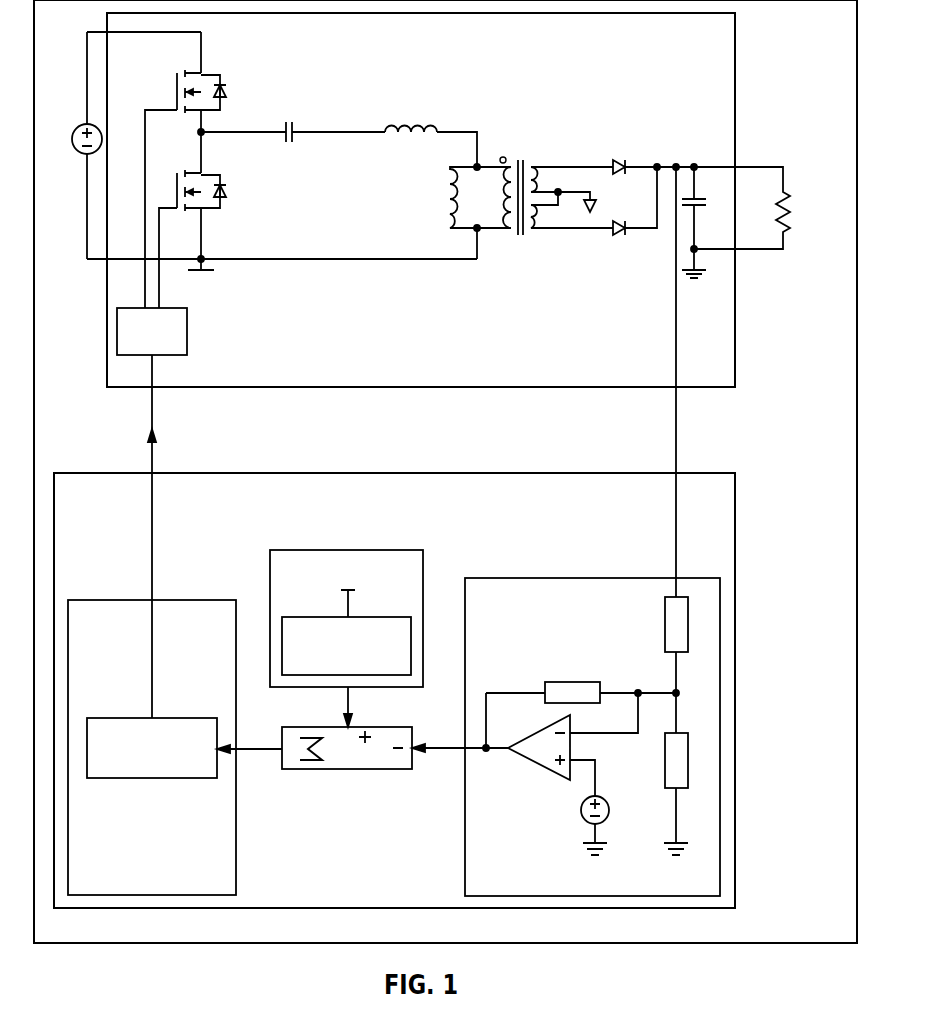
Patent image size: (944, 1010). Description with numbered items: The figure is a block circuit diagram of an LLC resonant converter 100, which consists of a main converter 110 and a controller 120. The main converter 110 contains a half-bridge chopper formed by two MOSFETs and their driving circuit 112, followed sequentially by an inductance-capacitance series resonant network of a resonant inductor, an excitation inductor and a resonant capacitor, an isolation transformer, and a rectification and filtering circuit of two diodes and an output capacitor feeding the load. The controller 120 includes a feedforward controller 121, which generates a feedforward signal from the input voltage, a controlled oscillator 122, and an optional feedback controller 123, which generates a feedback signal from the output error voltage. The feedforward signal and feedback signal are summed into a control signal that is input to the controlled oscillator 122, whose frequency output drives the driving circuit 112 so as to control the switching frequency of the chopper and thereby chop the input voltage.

The LLC resonant converter 100 is at (838, 26).
The main converter 110 is at (780, 326).
The driving circuit 112 is at (230, 329).
The controller 120 is at (775, 766).
The feedforward controller 121 is at (344, 508).
The controlled oscillator 122 is at (203, 558).
The feedback controller 123 is at (588, 530).